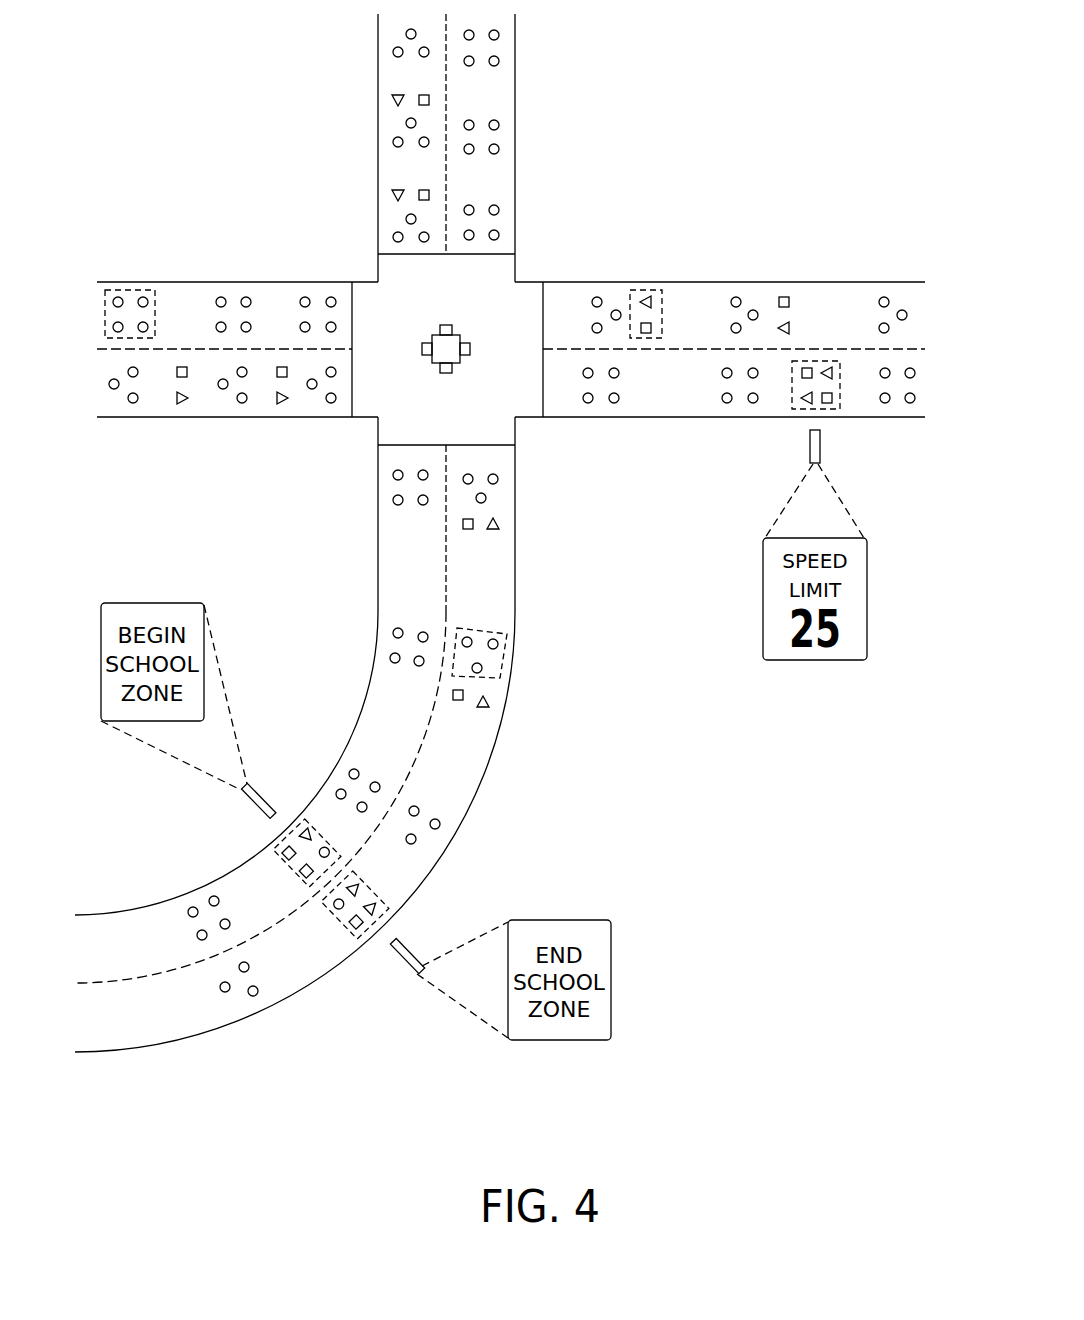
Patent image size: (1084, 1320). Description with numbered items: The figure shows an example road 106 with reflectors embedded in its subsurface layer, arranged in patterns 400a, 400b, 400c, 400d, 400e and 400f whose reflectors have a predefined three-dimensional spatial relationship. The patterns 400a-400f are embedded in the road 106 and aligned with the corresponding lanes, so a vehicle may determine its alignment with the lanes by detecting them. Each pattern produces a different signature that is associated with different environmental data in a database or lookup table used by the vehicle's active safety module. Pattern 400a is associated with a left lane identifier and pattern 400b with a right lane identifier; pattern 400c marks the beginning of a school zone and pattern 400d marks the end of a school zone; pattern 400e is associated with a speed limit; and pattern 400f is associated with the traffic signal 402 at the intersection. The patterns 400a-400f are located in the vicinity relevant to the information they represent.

The road 106 is at (560, 293).
The traffic signal 402 is at (461, 336).
The pattern 400a is at (505, 661).
The pattern 400b is at (127, 290).
The pattern 400c is at (300, 825).
The pattern 400d is at (345, 930).
The pattern 400e is at (830, 410).
The pattern 400f is at (645, 290).